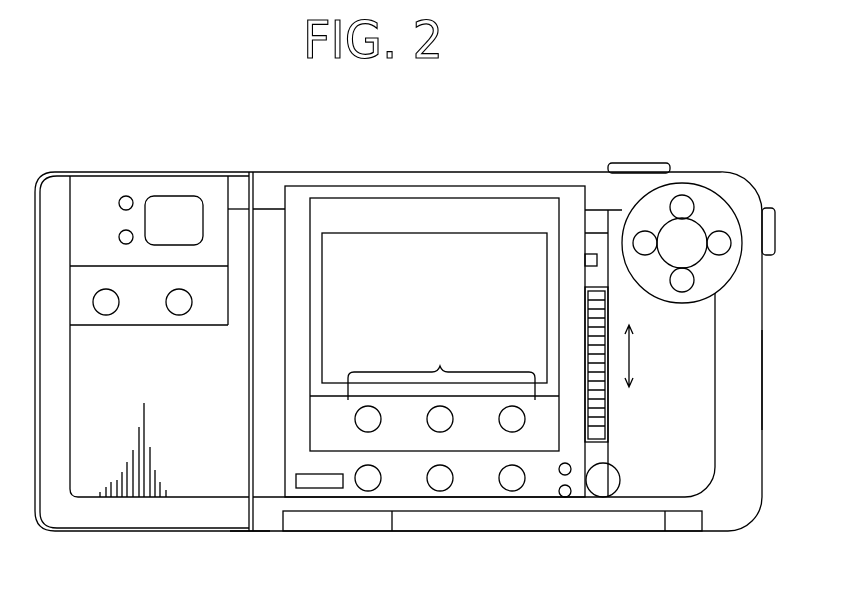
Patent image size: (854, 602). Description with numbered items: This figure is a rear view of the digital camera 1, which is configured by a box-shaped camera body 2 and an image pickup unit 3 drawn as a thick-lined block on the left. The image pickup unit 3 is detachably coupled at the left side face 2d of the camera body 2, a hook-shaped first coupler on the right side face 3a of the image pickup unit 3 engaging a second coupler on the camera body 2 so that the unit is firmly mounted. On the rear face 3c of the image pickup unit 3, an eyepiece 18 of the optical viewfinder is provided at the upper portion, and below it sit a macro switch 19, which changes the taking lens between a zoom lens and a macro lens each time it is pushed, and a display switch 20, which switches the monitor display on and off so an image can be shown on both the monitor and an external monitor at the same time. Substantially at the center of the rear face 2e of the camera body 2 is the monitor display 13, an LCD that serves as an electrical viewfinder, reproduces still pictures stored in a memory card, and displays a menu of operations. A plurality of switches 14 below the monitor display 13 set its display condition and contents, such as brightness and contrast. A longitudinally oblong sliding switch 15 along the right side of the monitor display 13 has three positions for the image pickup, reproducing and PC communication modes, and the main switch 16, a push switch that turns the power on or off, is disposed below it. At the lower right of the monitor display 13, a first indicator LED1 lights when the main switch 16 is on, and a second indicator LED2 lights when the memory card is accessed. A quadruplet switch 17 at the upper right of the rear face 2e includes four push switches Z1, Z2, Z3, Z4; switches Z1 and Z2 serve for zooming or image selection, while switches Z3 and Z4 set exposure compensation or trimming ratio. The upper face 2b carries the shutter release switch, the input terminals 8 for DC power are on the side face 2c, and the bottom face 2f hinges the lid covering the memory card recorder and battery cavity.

The digital camera 1 is at (272, 152).
The camera body 2 is at (378, 173).
The upper face 2b is at (720, 173).
The left side face 2c is at (763, 380).
The left side face 2d is at (250, 531).
The rear face 2e is at (300, 198).
The bottom face 2f is at (657, 532).
The image pickup unit 3 is at (115, 170).
The right side face 3a is at (250, 170).
The rear face 3c is at (198, 488).
The input terminals 8 is at (777, 230).
The monitor display 13 is at (496, 240).
The switches 14 is at (441, 383).
The sliding switch 15 is at (607, 405).
The main switch 16 is at (610, 482).
The quadruplet switch 17 is at (718, 208).
The eyepiece 18 is at (175, 202).
The macro switch 19 is at (106, 315).
The display switch 20 is at (179, 315).
The push switch Z1 is at (645, 247).
The push switch Z2 is at (723, 247).
The push switch Z3 is at (682, 197).
The push switch Z4 is at (682, 283).
The first indicator LED1 is at (560, 475).
The second indicator LED2 is at (568, 496).